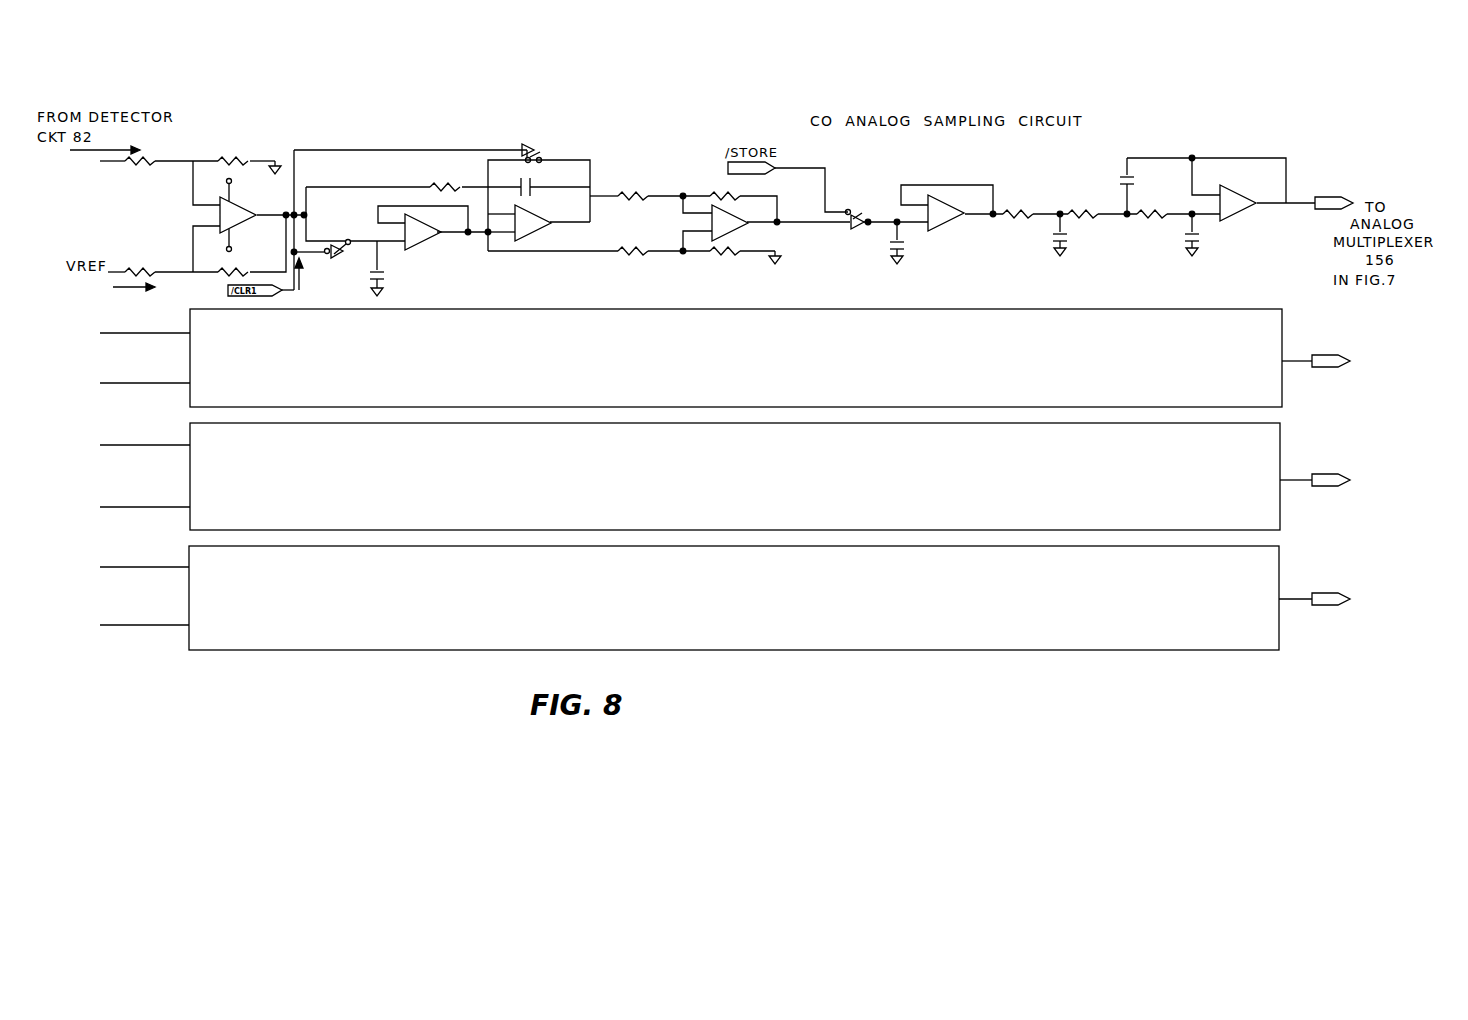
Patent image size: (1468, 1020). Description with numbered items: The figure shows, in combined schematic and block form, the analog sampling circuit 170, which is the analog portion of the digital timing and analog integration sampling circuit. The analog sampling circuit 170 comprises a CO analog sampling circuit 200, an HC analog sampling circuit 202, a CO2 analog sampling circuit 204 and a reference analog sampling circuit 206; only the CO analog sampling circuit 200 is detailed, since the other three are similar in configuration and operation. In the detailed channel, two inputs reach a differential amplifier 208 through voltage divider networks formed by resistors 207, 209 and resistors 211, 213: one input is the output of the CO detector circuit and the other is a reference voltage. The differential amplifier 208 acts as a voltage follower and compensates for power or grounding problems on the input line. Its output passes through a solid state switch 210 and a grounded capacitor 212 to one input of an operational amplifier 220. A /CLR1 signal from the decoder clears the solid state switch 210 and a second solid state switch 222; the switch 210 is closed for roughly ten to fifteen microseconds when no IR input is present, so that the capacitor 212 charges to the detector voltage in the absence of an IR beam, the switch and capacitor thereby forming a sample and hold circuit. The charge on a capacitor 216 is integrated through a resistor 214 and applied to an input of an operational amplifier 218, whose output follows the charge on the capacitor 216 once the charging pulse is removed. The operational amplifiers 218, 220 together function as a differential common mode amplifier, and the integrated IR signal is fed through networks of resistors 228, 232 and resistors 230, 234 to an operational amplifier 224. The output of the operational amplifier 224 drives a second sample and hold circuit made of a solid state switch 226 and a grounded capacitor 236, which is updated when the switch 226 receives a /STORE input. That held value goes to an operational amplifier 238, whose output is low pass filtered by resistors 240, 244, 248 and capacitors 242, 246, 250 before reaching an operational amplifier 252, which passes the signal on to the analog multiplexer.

The analog sampling circuit 170 is at (309, 661).
The CO analog sampling circuit 200 is at (745, 143).
The HC analog sampling circuit 202 is at (930, 371).
The CO2 analog sampling circuit 204 is at (925, 486).
The reference analog sampling circuit 206 is at (925, 606).
The resistor 207 is at (136, 168).
The differential amplifier 208 is at (218, 216).
The resistor 209 is at (234, 158).
The solid state switch 210 is at (338, 238).
The resistor 211 is at (218, 275).
The grounded capacitor 212 is at (384, 273).
The resistor 213 is at (138, 268).
The resistor 214 is at (444, 183).
The capacitor 216 is at (535, 180).
The operational amplifier 218 is at (533, 218).
The operational amplifier 220 is at (420, 232).
The solid state switch 222 is at (535, 150).
The operational amplifier 224 is at (735, 224).
The solid state switch 226 is at (856, 206).
The resistor 228 is at (633, 192).
The resistor 230 is at (634, 256).
The resistor 232 is at (728, 192).
The resistor 234 is at (725, 256).
The grounded capacitor 236 is at (888, 247).
The operational amplifier 238 is at (940, 216).
The resistor 240 is at (1014, 209).
The capacitor 242 is at (1050, 240).
The resistor 244 is at (1088, 222).
The capacitor 246 is at (1119, 180).
The resistor 248 is at (1150, 221).
The capacitor 250 is at (1197, 238).
The operational amplifier 252 is at (1240, 206).